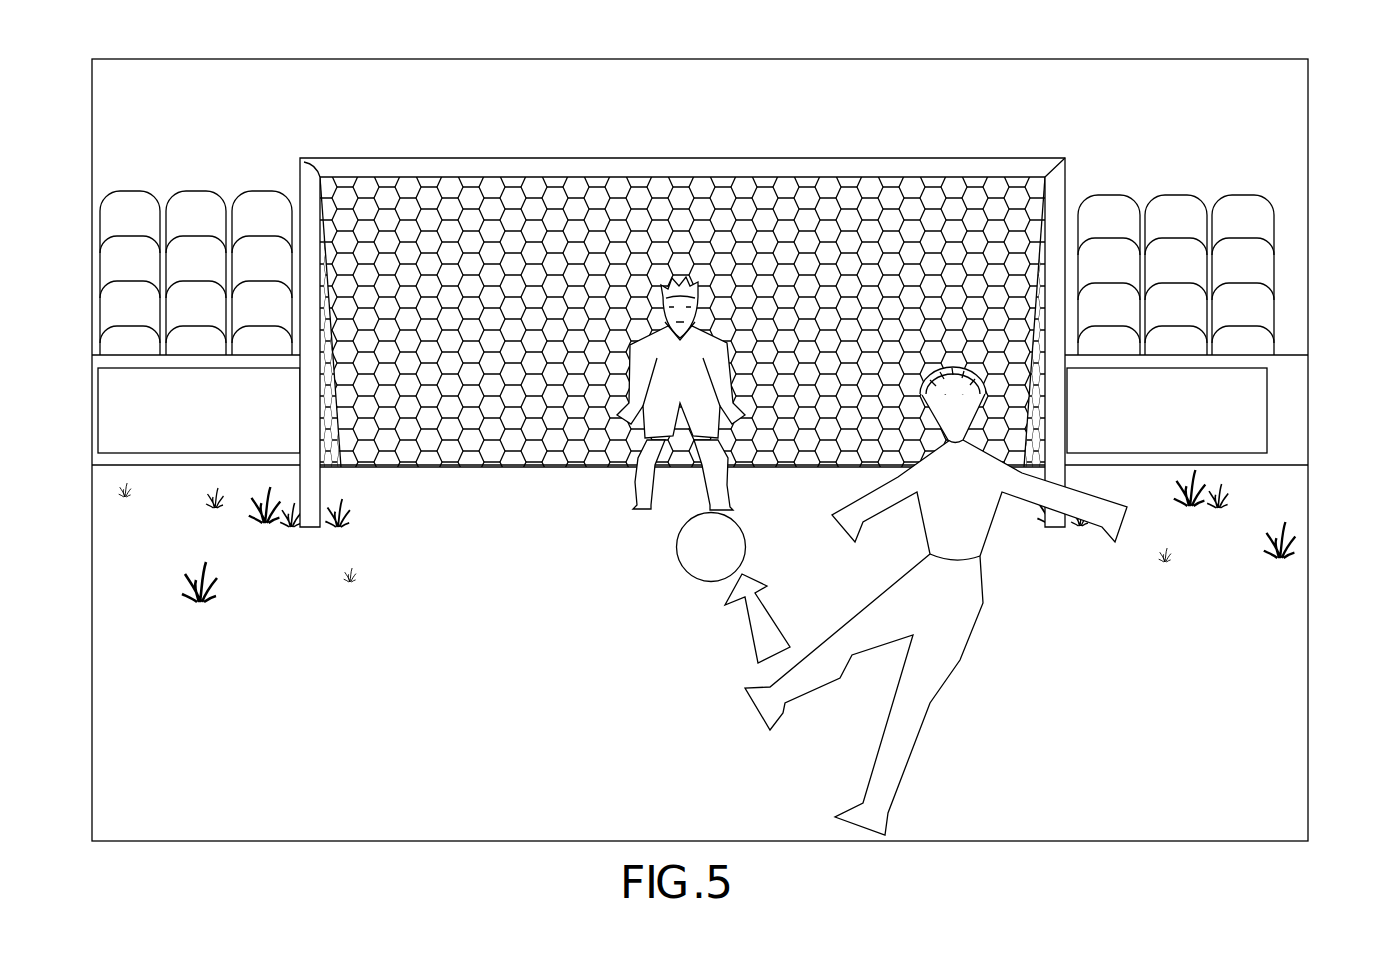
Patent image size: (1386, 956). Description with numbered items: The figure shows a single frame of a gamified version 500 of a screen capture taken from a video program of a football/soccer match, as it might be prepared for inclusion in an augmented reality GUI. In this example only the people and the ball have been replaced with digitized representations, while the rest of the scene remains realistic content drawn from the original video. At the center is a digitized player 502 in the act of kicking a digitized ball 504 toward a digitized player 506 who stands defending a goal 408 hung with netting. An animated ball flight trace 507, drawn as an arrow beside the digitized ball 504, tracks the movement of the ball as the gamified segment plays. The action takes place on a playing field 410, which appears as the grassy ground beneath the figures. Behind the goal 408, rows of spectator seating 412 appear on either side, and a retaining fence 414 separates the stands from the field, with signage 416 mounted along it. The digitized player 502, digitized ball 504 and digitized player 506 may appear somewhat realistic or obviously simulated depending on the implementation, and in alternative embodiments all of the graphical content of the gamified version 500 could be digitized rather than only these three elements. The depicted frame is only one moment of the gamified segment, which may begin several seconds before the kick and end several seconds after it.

The gamified version 500 is at (1095, 57).
The goal 408 is at (1008, 158).
The playing field 410 is at (448, 638).
The spectator seating 412 is at (193, 203).
The retaining fence 414 is at (1273, 363).
The signage 416 is at (1240, 443).
The digitized player 502 is at (982, 562).
The digitized ball 504 is at (693, 535).
The digitized player 506 is at (645, 482).
The animated ball flight trace 507 is at (760, 633).